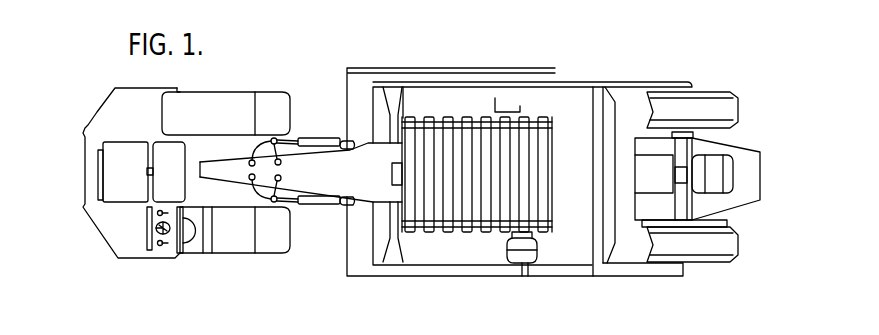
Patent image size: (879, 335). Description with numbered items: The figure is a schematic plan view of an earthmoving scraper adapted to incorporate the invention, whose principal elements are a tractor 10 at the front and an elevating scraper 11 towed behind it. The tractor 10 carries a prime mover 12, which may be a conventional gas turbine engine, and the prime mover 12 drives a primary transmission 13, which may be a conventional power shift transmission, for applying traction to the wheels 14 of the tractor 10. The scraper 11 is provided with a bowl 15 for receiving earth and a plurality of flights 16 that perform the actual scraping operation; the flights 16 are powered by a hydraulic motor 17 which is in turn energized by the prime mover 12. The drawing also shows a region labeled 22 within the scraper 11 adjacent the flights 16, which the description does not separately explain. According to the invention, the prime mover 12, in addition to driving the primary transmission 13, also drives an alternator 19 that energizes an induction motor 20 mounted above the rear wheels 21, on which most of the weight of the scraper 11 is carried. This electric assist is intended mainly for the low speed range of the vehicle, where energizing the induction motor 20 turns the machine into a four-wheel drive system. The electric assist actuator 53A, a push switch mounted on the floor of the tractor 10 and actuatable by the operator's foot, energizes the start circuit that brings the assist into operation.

The tractor 10 is at (80, 172).
The elevating scraper 11 is at (527, 64).
The prime mover 12 is at (118, 150).
The primary transmission 13 is at (288, 137).
The wheels 14 is at (250, 58).
The bowl 15 is at (582, 118).
The flights 16 is at (489, 233).
The hydraulic motor 17 is at (537, 252).
The alternator 19 is at (178, 145).
The induction motor 20 is at (732, 156).
The rear wheels 21 is at (722, 92).
The slat compartment 22 is at (495, 174).
The electric assist actuator 53A is at (186, 243).